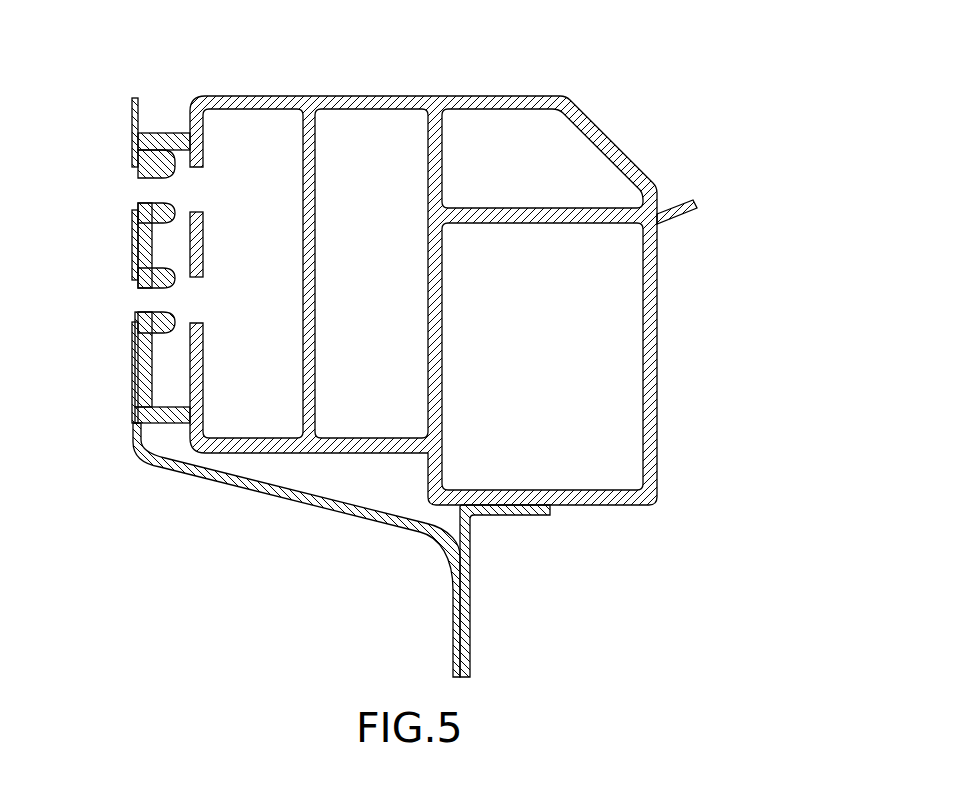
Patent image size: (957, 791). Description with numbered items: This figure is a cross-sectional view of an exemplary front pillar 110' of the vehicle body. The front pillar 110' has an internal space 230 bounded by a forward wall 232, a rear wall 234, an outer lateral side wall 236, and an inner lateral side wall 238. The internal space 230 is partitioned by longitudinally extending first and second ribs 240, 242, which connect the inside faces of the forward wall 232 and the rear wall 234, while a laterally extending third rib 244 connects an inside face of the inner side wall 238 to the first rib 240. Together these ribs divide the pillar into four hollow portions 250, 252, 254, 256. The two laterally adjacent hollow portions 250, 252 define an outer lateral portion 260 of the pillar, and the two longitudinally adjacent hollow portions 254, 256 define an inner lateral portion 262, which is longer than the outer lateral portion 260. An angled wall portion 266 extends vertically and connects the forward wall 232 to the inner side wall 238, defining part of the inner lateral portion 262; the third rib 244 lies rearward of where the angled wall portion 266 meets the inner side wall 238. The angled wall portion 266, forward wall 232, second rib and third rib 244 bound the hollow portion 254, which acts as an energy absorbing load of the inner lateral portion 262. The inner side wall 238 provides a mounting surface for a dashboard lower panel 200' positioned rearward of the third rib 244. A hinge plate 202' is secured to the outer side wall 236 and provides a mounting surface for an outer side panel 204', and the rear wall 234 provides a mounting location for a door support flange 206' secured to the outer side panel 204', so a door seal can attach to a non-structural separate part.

The front pillar 110' is at (456, 344).
The dashboard lower panel 200' is at (471, 300).
The hinge plate 202' is at (117, 260).
The outer side panel 204' is at (296, 550).
The door support flange 206' is at (511, 591).
The internal space 230 is at (367, 112).
The forward wall 232 is at (448, 97).
The rear wall 234 is at (582, 508).
The outer lateral side wall 236 is at (190, 371).
The inner lateral side wall 238 is at (658, 366).
The first rib 240 is at (428, 318).
The second rib 242 is at (316, 252).
The third rib 244 is at (546, 224).
The hollow portion 250 is at (243, 113).
The hollow portion 252 is at (366, 430).
The hollow portion 254 is at (601, 149).
The hollow portion 256 is at (640, 447).
The outer lateral portion 260 is at (300, 483).
The inner lateral portion 262 is at (639, 552).
The angled wall portion 266 is at (597, 132).